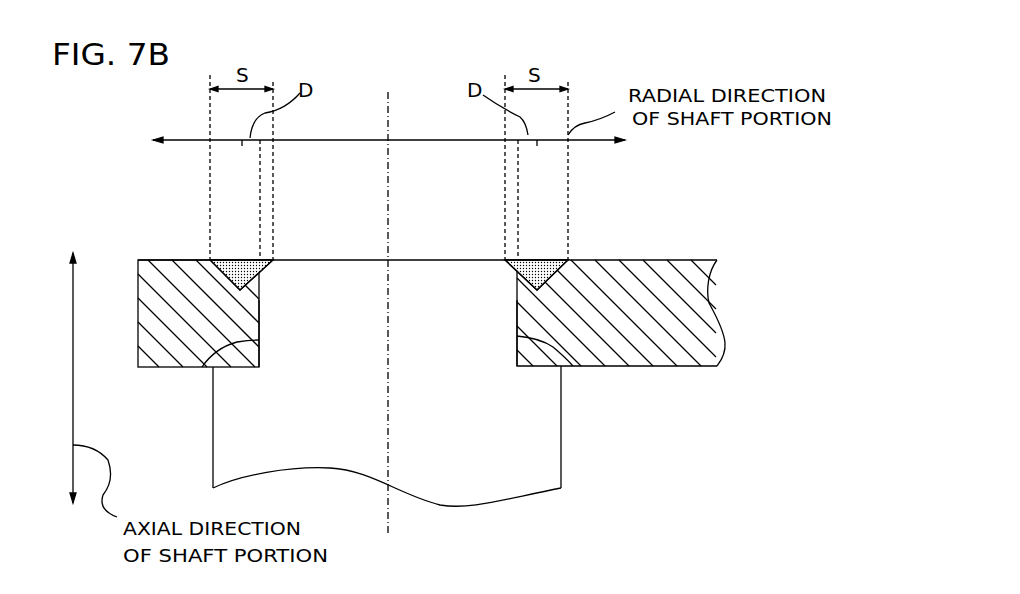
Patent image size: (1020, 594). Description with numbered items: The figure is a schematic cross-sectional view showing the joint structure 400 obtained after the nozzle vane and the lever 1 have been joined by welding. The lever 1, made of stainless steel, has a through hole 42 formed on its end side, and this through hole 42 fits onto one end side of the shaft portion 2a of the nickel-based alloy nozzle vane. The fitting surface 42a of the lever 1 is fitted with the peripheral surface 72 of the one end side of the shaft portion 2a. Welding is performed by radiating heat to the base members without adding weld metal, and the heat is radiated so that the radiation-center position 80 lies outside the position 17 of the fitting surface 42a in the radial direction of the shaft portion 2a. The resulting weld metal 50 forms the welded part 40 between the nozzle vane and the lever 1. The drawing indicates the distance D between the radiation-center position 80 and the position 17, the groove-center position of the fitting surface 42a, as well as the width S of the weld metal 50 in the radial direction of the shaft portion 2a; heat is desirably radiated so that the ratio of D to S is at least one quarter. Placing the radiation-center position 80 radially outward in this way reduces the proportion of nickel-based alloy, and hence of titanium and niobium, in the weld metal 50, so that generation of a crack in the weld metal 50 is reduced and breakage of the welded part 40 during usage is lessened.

The joint structure 400 is at (642, 72).
The lever 1 is at (693, 259).
The shaft portion 2a is at (561, 470).
The position of the fitting surface 17 is at (262, 134).
The welded part 40 is at (192, 226).
The through hole 42 is at (283, 338).
The fitting surface 42a is at (259, 344).
The weld metal 50 is at (271, 266).
The peripheral surface 72 is at (202, 367).
The radiation-center position 80 is at (241, 134).